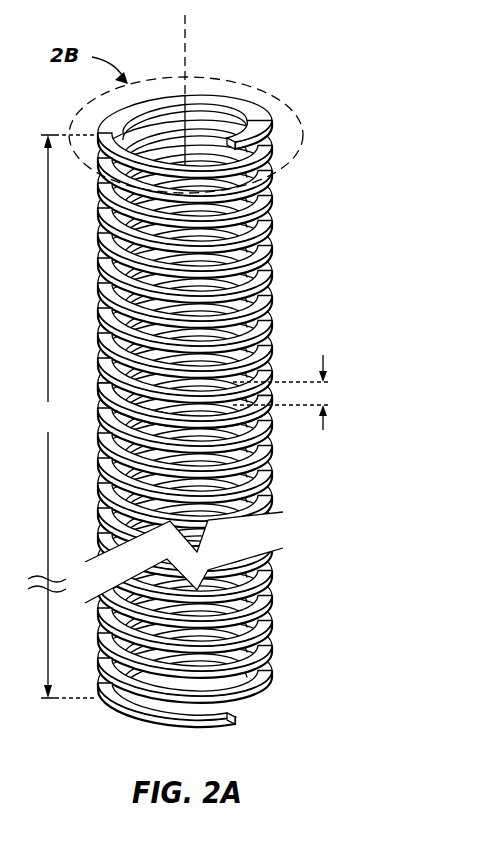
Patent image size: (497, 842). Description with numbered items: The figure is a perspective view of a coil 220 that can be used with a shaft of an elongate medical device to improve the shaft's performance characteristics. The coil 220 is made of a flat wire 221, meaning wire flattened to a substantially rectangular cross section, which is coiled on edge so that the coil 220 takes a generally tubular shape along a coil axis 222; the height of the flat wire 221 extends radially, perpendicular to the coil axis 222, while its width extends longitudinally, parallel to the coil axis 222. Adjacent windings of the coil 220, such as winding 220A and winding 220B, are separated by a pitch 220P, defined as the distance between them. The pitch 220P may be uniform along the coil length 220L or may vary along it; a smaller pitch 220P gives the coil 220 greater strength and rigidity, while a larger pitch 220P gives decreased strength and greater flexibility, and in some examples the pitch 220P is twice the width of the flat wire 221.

The coil 220 is at (270, 246).
The flat wire 221 is at (247, 256).
The winding 220A is at (203, 382).
The winding 220B is at (203, 405).
The pitch 220P is at (320, 393).
The coil length 220L is at (59, 416).
The coil axis 222 is at (186, 32).